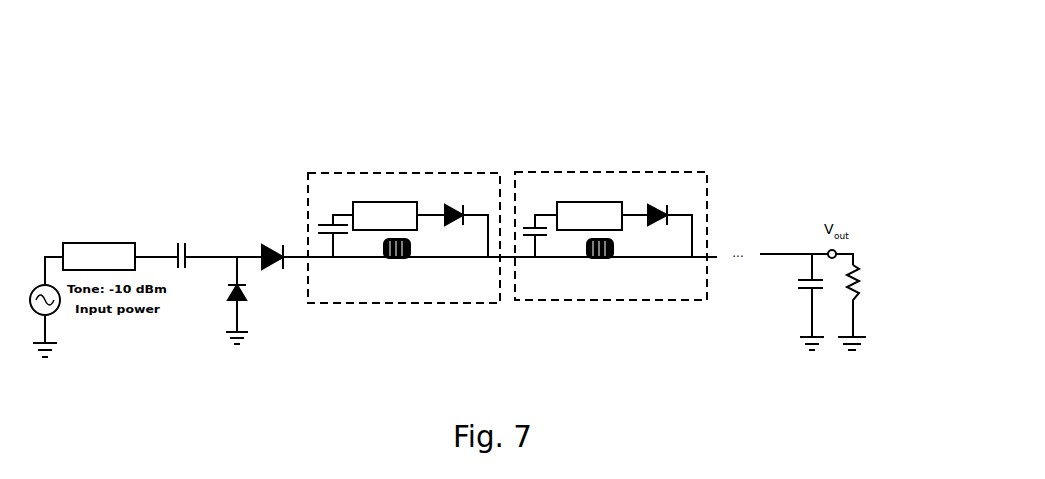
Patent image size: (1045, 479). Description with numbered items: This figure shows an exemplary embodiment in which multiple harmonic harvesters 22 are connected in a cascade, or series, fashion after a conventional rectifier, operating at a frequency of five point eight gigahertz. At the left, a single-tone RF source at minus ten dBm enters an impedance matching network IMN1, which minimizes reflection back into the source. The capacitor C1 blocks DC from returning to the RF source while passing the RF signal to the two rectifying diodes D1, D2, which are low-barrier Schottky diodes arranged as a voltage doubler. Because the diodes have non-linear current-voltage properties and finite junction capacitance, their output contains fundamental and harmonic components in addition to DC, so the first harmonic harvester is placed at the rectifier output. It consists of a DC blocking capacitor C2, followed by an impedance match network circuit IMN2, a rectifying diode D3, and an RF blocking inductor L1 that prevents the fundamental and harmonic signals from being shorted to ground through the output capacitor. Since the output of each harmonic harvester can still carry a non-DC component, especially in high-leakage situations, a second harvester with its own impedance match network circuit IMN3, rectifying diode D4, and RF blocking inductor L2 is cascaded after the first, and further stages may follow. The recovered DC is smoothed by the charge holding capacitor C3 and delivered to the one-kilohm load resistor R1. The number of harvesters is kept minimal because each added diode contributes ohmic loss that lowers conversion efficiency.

The harmonic harvesters 22 is at (496, 155).
The impedance matching network IMN1 is at (99, 256).
The DC blocking capacitor C1 is at (186, 247).
The rectifying diode D1 is at (225, 300).
The rectifying diode D2 is at (274, 268).
The DC blocking capacitor C2 is at (319, 236).
The impedance match network circuit IMN2 is at (385, 216).
The rectifying diode D3 is at (452, 219).
The RF blocking inductor L1 is at (397, 264).
The impedance match network circuit IMN3 is at (589, 216).
The rectifying diode D4 is at (657, 219).
The RF blocking inductor L2 is at (600, 263).
The charge holding capacitor C3 is at (800, 302).
The load resistor R1 is at (893, 300).